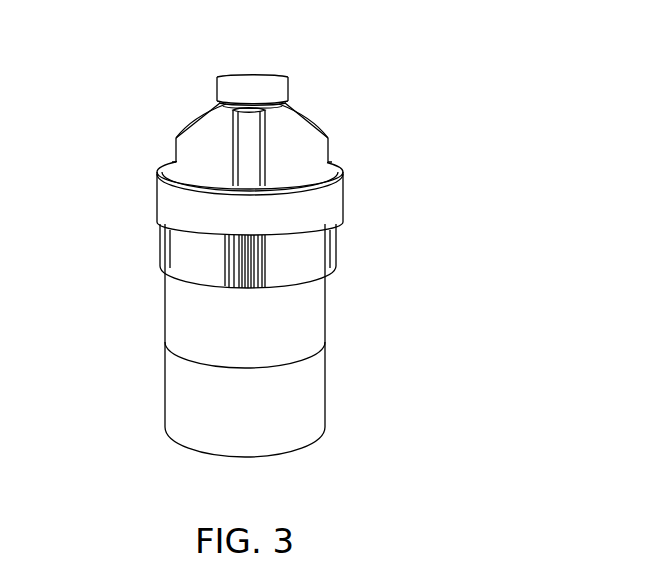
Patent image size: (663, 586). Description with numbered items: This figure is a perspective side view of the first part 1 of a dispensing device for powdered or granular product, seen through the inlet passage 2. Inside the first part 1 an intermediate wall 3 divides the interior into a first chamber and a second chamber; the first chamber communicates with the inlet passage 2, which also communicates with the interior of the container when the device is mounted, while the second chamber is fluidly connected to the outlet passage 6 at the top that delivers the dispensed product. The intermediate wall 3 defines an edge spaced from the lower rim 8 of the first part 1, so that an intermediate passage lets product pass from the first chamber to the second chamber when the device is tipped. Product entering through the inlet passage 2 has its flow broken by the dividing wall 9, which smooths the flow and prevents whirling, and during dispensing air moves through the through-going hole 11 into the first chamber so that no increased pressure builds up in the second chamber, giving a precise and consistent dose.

The first part 1 is at (528, 78).
The inlet passage 2 is at (188, 262).
The intermediate wall 3 is at (288, 263).
The outlet passage 6 is at (247, 75).
The lower rim 8 is at (235, 455).
The dividing wall 9 is at (250, 263).
The through-going hole 11 is at (258, 110).